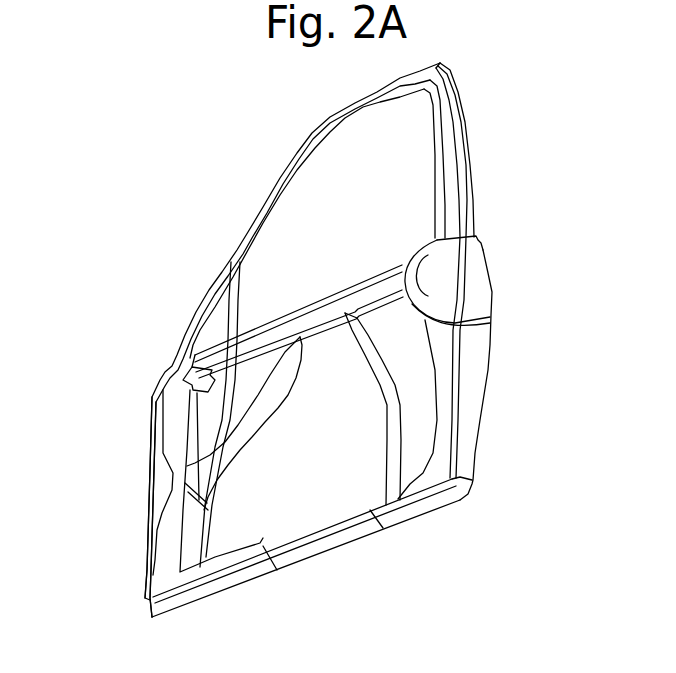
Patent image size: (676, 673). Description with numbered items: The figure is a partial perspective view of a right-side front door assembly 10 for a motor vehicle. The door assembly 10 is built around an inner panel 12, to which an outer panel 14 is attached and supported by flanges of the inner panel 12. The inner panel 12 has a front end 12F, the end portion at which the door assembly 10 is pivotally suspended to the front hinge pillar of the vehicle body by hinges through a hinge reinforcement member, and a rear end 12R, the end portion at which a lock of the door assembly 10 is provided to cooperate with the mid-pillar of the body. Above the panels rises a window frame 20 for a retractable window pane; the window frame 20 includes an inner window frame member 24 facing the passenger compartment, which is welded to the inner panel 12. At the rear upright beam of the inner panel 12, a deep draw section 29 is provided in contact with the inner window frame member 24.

The door assembly 10 is at (127, 298).
The inner panel 12 is at (475, 442).
The front end of the inner panel 12F is at (150, 500).
The rear end of the inner panel 12R is at (483, 400).
The outer panel 14 is at (310, 508).
The window frame 20 is at (268, 201).
The inner window frame member 24 is at (452, 162).
The deep draw section 29 is at (442, 277).